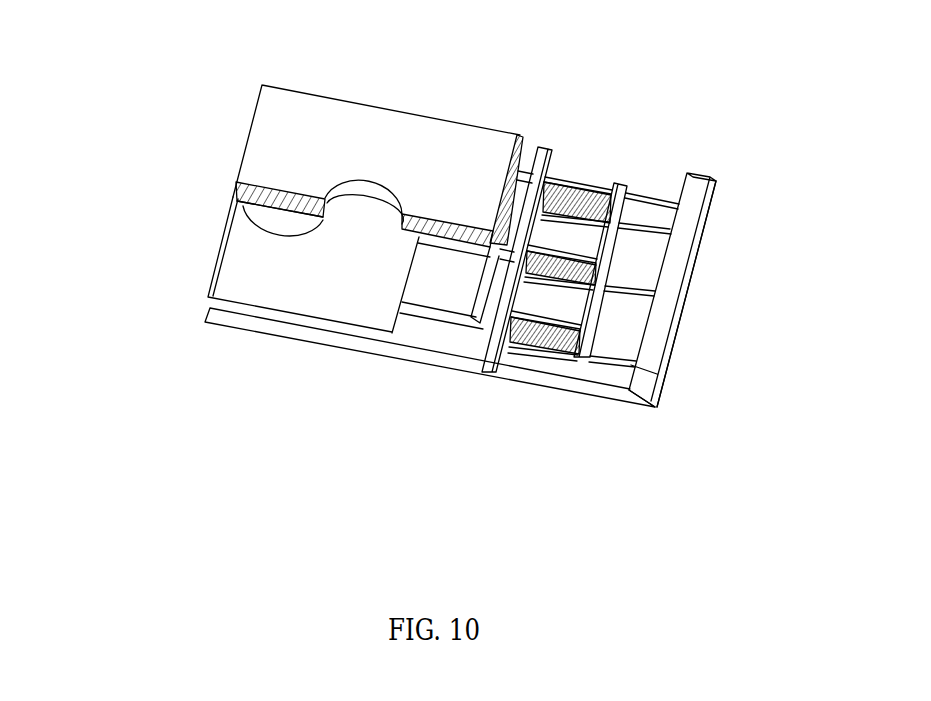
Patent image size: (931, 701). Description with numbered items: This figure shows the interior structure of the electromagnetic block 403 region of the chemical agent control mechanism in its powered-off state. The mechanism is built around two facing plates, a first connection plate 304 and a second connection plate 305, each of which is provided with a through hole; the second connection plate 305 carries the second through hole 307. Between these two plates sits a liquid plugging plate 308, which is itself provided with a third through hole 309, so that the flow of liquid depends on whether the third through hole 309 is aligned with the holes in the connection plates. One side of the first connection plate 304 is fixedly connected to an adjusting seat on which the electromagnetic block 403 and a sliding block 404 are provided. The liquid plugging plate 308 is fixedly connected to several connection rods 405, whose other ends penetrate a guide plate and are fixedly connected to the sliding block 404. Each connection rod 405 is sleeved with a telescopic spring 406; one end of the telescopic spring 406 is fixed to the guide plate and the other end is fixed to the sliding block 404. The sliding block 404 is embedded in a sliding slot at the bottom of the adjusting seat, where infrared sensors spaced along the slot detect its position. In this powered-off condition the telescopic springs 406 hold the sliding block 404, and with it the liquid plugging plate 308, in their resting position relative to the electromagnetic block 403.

The first connection plate 304 is at (228, 322).
The second connection plate 305 is at (342, 138).
The second through hole 307 is at (386, 192).
The liquid plugging plate 308 is at (337, 272).
The third through hole 309 is at (235, 215).
The electromagnetic block 403 is at (666, 268).
The sliding block 404 is at (625, 204).
The connection rod 405 is at (451, 313).
The telescopic spring 406 is at (553, 348).